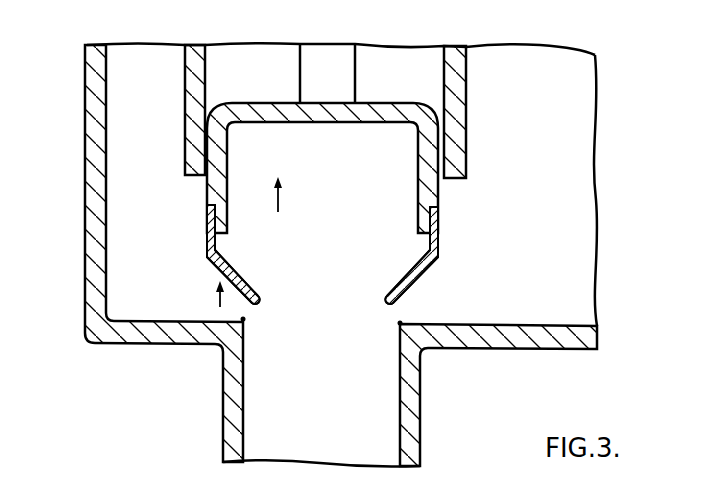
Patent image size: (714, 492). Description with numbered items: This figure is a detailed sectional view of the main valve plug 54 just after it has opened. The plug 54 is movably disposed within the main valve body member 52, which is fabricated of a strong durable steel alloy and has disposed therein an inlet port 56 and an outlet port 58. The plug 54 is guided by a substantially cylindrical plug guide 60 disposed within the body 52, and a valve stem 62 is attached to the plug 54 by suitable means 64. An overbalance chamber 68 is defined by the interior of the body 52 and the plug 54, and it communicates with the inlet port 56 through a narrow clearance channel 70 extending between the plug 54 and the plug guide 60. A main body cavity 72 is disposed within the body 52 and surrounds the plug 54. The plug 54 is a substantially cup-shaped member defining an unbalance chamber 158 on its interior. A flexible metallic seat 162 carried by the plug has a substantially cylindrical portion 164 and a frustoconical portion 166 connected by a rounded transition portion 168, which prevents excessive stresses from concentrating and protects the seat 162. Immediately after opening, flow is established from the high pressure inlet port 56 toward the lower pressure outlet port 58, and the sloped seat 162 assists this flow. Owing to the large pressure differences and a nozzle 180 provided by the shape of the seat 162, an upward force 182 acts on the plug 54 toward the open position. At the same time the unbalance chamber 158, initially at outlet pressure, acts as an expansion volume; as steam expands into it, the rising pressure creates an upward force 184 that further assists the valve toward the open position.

The main valve body member 52 is at (92, 121).
The inlet port 56 is at (518, 216).
The main body cavity 72 is at (117, 219).
The overbalance chamber 68 is at (235, 83).
The plug guide 60 is at (186, 100).
The valve stem 62 is at (352, 69).
The means for attaching the valve stem 64 is at (357, 101).
The narrow clearance channel 70 is at (441, 117).
The main valve plug 54 is at (222, 166).
The unbalance chamber 158 is at (320, 173).
The upward force 184 is at (278, 204).
The cylindrical portion 164 is at (216, 237).
The frustoconical portion 166 is at (242, 281).
The rounded transition portion 168 is at (208, 258).
The flexible metallic seat 162 is at (440, 234).
The upward force 182 is at (219, 296).
The nozzle 180 is at (244, 319).
The outlet port 58 is at (308, 411).